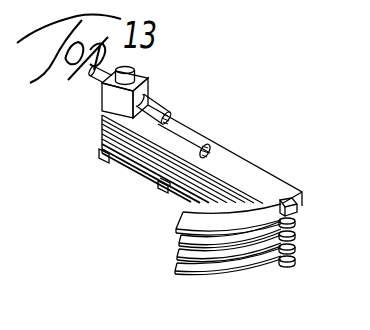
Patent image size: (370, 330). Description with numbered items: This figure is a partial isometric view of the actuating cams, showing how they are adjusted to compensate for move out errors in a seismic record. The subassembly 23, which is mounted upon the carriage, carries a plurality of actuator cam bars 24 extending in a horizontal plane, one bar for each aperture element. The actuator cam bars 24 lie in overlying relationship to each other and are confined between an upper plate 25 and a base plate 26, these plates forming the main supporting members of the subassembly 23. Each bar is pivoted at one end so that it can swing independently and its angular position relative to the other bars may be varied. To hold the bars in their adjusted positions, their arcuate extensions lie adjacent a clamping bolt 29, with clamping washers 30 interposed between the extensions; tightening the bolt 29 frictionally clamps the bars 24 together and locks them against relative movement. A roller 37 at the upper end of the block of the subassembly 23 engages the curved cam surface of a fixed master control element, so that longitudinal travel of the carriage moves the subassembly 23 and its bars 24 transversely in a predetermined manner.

The subassembly 23 is at (153, 83).
The actuator cam bar 24 is at (240, 166).
The upper plate 25 is at (203, 136).
The base plate 26 is at (158, 184).
The clamping bolt 29 is at (287, 265).
The clamping washers 30 is at (297, 247).
The roller 37 is at (134, 69).